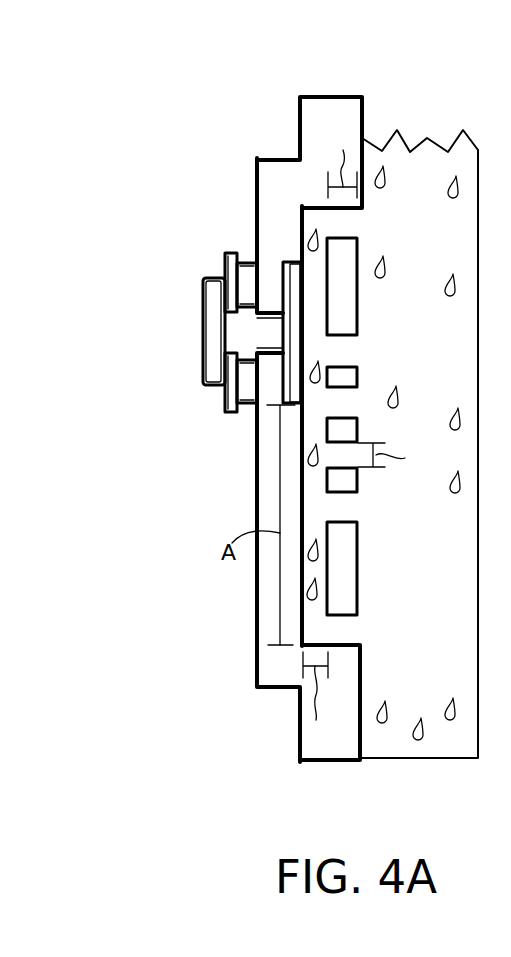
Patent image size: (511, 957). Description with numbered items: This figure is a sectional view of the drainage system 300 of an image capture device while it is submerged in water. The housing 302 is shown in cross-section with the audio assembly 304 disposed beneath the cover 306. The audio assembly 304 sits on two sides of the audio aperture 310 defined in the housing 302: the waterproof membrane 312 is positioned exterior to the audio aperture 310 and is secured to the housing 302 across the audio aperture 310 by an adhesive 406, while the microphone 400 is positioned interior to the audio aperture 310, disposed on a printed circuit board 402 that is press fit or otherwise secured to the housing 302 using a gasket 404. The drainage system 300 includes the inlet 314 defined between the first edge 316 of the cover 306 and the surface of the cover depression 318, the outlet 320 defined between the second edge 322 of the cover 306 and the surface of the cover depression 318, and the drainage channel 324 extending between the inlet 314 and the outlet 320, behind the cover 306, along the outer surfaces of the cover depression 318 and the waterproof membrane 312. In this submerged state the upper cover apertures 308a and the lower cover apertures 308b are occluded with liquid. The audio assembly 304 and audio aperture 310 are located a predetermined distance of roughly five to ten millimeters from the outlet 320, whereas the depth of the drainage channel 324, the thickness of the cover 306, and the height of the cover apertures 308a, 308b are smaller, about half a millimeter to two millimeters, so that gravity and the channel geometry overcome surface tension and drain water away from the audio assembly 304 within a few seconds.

The drainage system 300 is at (397, 108).
The housing 302 is at (320, 96).
The audio assembly 304 is at (204, 311).
The cover 306 is at (357, 563).
The upper cover apertures 308a is at (350, 367).
The lower cover apertures 308b is at (350, 522).
The audio aperture 310 is at (270, 348).
The waterproof membrane 312 is at (305, 303).
The inlet 314 is at (350, 208).
The first edge 316 is at (355, 238).
The cover depression 318 is at (302, 488).
The outlet 320 is at (350, 643).
The second edge 322 is at (357, 613).
The drainage channel 324 is at (322, 597).
The microphone 400 is at (203, 283).
The printed circuit board 402 is at (225, 398).
The gasket 404 is at (248, 262).
The adhesive 406 is at (287, 262).